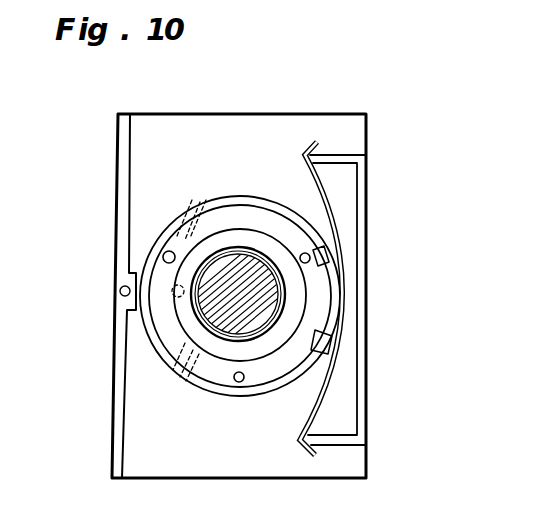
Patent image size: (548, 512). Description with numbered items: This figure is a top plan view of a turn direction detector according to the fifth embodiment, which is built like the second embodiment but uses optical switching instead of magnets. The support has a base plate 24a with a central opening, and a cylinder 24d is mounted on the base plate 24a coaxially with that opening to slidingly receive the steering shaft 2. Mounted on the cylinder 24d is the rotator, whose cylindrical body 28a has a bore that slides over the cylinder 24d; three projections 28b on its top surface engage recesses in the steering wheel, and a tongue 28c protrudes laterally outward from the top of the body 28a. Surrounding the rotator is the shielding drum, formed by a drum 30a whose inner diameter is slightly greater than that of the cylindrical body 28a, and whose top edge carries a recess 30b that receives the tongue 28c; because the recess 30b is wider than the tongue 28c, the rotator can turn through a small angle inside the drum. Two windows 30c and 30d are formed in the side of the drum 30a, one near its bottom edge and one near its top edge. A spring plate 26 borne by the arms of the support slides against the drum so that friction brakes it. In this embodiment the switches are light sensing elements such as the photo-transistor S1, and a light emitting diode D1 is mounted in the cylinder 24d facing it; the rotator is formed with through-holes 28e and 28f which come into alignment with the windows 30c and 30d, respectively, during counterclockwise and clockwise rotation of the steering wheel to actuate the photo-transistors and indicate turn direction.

The steering shaft 2 is at (256, 314).
The base plate 24a is at (352, 126).
The cylinder 24d is at (266, 237).
The spring plate 26 is at (320, 181).
The cylindrical body 28a is at (240, 216).
The projections 28b is at (165, 250).
The tongue 28c is at (327, 291).
The through-hole 28e is at (187, 354).
The through-hole 28f is at (173, 228).
The drum 30a is at (322, 372).
The recess 30b is at (314, 356).
The window 30c is at (191, 382).
The window 30d is at (197, 208).
The light emitting diode D1 is at (167, 274).
The photo-transistor S1 is at (122, 293).